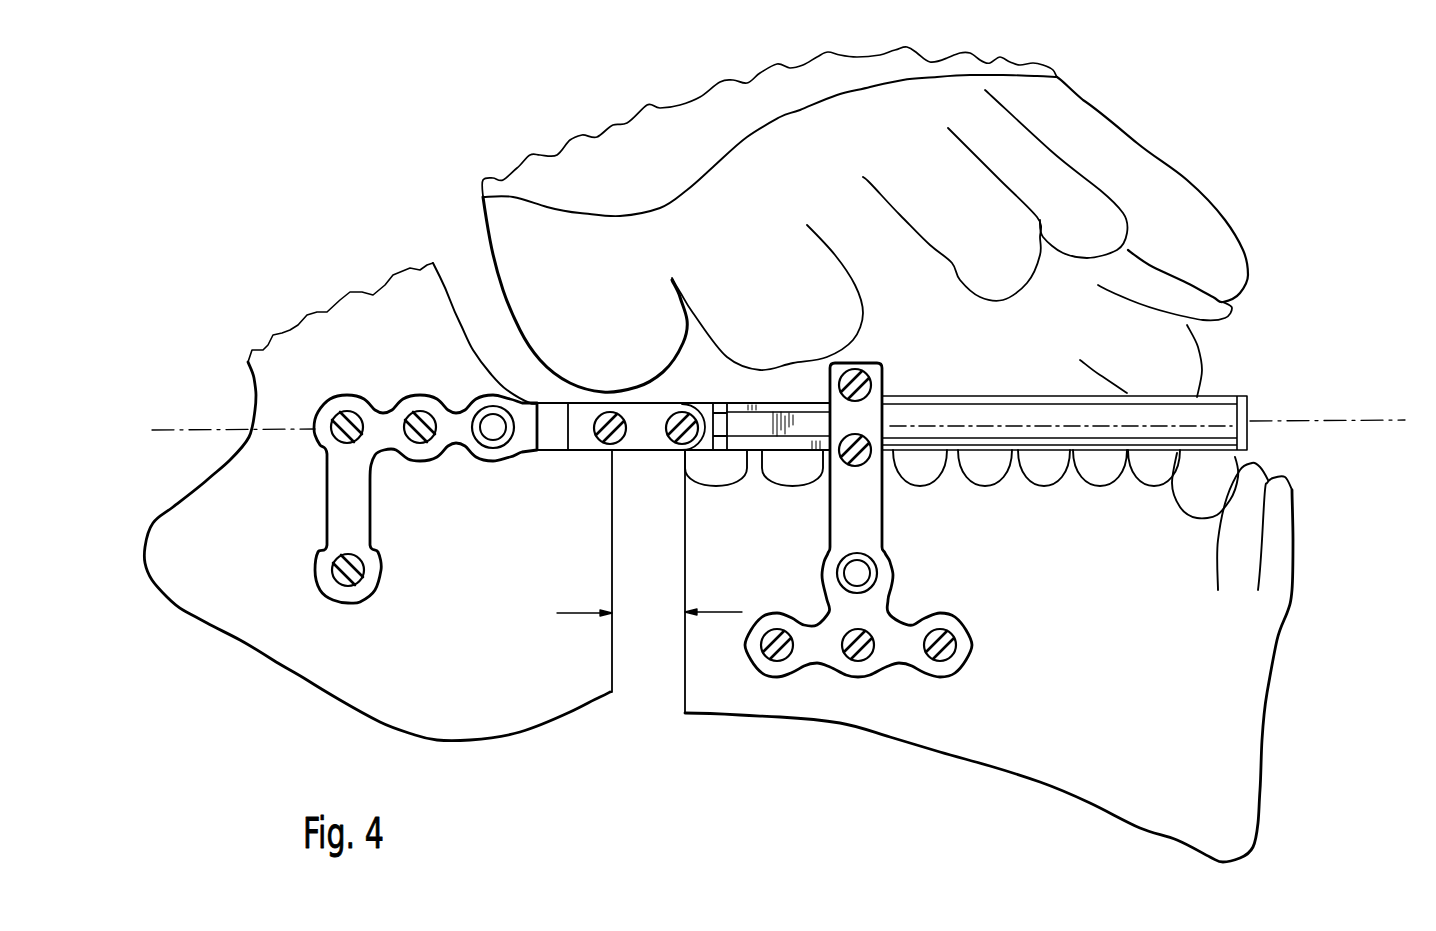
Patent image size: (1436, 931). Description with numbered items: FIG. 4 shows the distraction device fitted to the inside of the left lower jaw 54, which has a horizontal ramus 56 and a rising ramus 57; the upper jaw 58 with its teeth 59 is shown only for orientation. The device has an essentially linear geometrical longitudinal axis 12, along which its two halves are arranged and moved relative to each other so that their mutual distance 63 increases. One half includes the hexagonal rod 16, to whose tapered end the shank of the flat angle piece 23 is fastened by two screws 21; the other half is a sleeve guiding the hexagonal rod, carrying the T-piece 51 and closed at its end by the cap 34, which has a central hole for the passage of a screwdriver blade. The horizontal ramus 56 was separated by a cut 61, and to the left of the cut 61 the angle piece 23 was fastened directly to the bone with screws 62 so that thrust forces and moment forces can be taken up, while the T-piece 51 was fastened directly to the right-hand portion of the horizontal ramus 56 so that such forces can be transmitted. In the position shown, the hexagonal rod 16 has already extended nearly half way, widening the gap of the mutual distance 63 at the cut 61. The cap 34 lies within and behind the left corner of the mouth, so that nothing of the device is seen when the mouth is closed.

The geometrical longitudinal axis 12 is at (1396, 420).
The hexagonal rod 16 is at (790, 403).
The screws 21 is at (665, 432).
The angle piece 23 is at (410, 493).
The cap 34 is at (1243, 410).
The T-piece 51 is at (908, 568).
The left lower jaw 54 is at (612, 747).
The horizontal ramus 56 is at (1133, 660).
The rising ramus 57 is at (388, 343).
The upper jaw 58 is at (680, 142).
The teeth 59 is at (1075, 117).
The cut 61 is at (647, 678).
The screws 62 is at (407, 433).
The mutual distance 63 is at (649, 613).